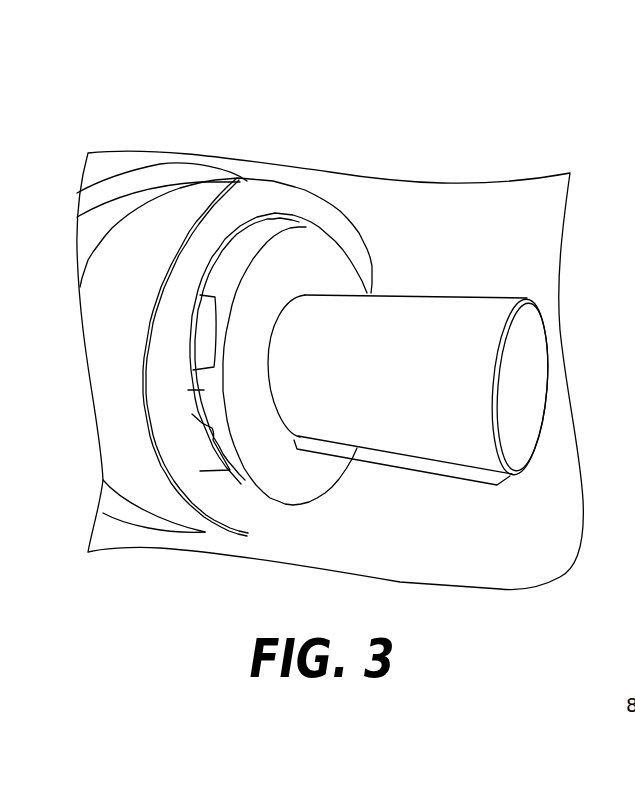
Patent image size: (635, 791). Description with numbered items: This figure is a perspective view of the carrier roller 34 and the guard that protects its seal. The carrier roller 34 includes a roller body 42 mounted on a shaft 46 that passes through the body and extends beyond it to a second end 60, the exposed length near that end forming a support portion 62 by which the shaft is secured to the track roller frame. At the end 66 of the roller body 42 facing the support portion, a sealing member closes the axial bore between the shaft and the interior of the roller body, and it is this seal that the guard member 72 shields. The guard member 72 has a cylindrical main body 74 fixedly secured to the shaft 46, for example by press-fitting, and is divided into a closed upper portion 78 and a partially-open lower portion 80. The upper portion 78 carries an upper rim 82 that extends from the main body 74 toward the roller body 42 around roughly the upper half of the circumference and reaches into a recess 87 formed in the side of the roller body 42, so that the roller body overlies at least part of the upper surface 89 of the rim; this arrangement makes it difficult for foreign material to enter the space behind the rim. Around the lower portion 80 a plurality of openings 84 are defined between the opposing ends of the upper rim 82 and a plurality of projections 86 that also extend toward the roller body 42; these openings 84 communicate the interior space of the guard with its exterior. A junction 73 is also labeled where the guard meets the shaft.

The carrier roller 34 is at (218, 134).
The roller body 42 is at (177, 210).
The shaft 46 is at (487, 312).
The second end 60 is at (518, 390).
The support portion 62 is at (447, 478).
The end of roller body 66 is at (310, 210).
The guard member 72 is at (277, 471).
The junction 73 is at (293, 297).
The cylindrical main body 74 is at (232, 380).
The closed upper portion 78 is at (240, 223).
The partially-open lower portion 80 is at (240, 506).
The upper rim 82 is at (218, 282).
The openings 84 is at (207, 437).
The projections 86 is at (222, 388).
The recess 87 is at (277, 227).
The upper surface 89 is at (184, 242).